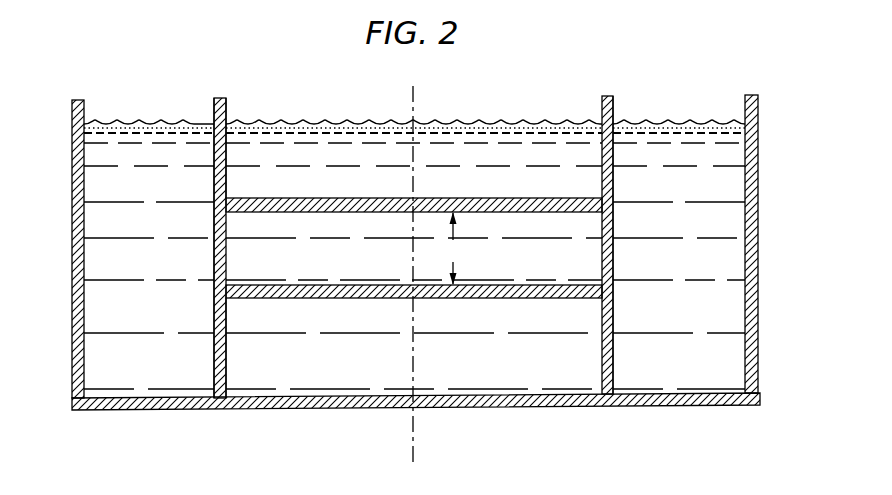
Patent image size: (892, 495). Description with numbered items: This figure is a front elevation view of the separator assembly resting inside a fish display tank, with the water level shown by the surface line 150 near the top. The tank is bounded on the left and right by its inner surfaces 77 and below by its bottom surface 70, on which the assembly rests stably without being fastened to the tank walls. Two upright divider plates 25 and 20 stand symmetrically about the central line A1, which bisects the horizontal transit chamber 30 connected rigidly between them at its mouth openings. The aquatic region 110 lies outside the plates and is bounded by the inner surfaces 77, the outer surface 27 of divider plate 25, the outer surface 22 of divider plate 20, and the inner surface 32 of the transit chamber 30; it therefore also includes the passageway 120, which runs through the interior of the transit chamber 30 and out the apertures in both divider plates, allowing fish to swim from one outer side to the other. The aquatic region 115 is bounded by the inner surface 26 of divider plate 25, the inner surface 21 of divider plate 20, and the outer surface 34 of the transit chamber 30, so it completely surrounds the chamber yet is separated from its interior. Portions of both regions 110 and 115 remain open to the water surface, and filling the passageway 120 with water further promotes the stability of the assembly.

The divider plate 20 is at (415, 214).
The inner surface of divider plate 21 is at (602, 112).
The outer surface of divider plate 22 is at (613, 194).
The divider plate 25 is at (220, 97).
The inner surface of divider plate 26 is at (226, 118).
The outer surface of divider plate 27 is at (214, 192).
The transit chamber 30 is at (386, 197).
The inner surface of transit chamber 32 is at (453, 248).
The outer surface of transit chamber 34 is at (520, 197).
The bottom surface of fish display tank 70 is at (135, 396).
The inner surfaces of fish display tank 77 is at (84, 108).
The aquatic region 110 is at (167, 151).
The aquatic region 115 is at (462, 151).
The passageway 120 is at (590, 246).
The fluid surface level 150 is at (336, 123).
The line bisecting transit chamber A1 is at (410, 267).